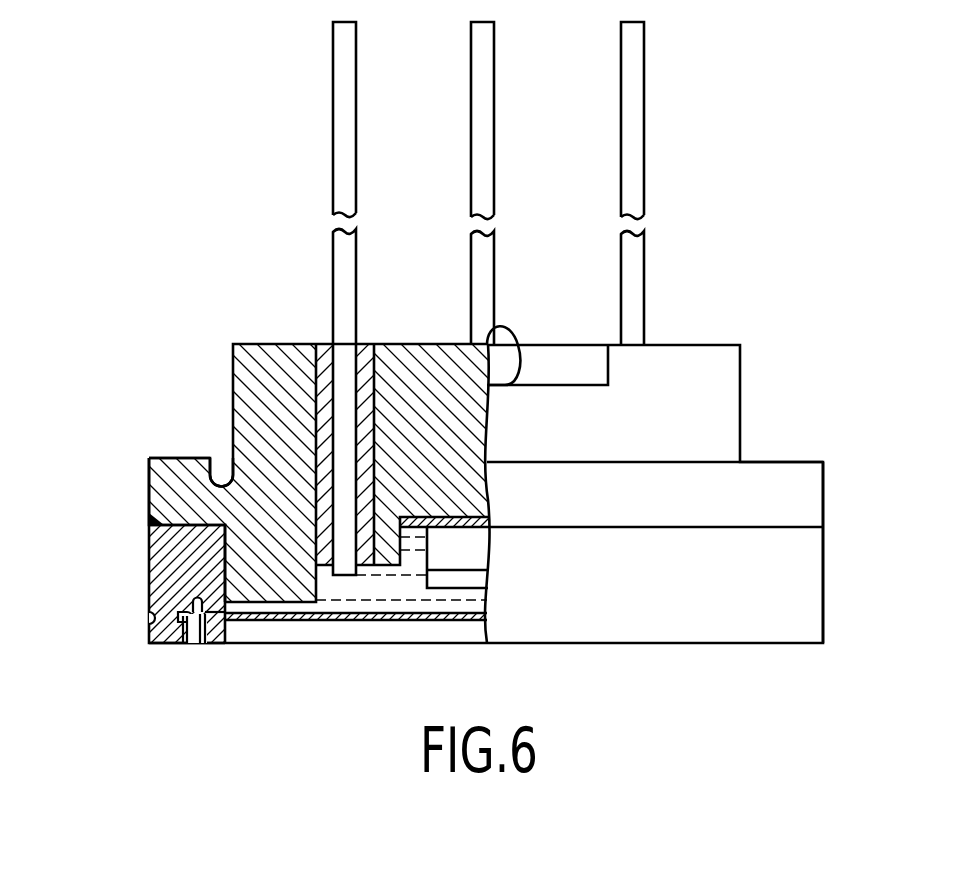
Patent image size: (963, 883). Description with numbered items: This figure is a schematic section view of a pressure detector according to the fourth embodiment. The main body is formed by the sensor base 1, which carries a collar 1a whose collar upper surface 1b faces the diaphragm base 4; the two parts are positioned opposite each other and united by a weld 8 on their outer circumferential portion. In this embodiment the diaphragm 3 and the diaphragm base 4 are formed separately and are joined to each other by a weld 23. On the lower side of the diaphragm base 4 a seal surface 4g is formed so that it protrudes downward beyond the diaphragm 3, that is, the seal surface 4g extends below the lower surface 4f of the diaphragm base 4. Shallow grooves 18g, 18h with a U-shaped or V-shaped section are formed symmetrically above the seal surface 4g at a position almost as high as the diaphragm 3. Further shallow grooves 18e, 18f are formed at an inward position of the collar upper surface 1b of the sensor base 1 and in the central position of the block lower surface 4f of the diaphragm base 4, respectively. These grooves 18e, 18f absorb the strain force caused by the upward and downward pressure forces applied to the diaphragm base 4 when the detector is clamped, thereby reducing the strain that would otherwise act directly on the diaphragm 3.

The sensor base 1 is at (126, 431).
The collar 1a is at (167, 486).
The collar upper surface 1b is at (170, 456).
The shallow groove 18e is at (222, 470).
The weld 8 is at (149, 524).
The diaphragm base 4 is at (143, 533).
The shallow groove 18f is at (192, 601).
The shallow groove 18g is at (147, 619).
The seal surface 4g is at (150, 643).
The shallow groove 18h is at (181, 644).
The lower surface 4f is at (196, 628).
The weld 23 is at (201, 620).
The diaphragm 3 is at (400, 621).